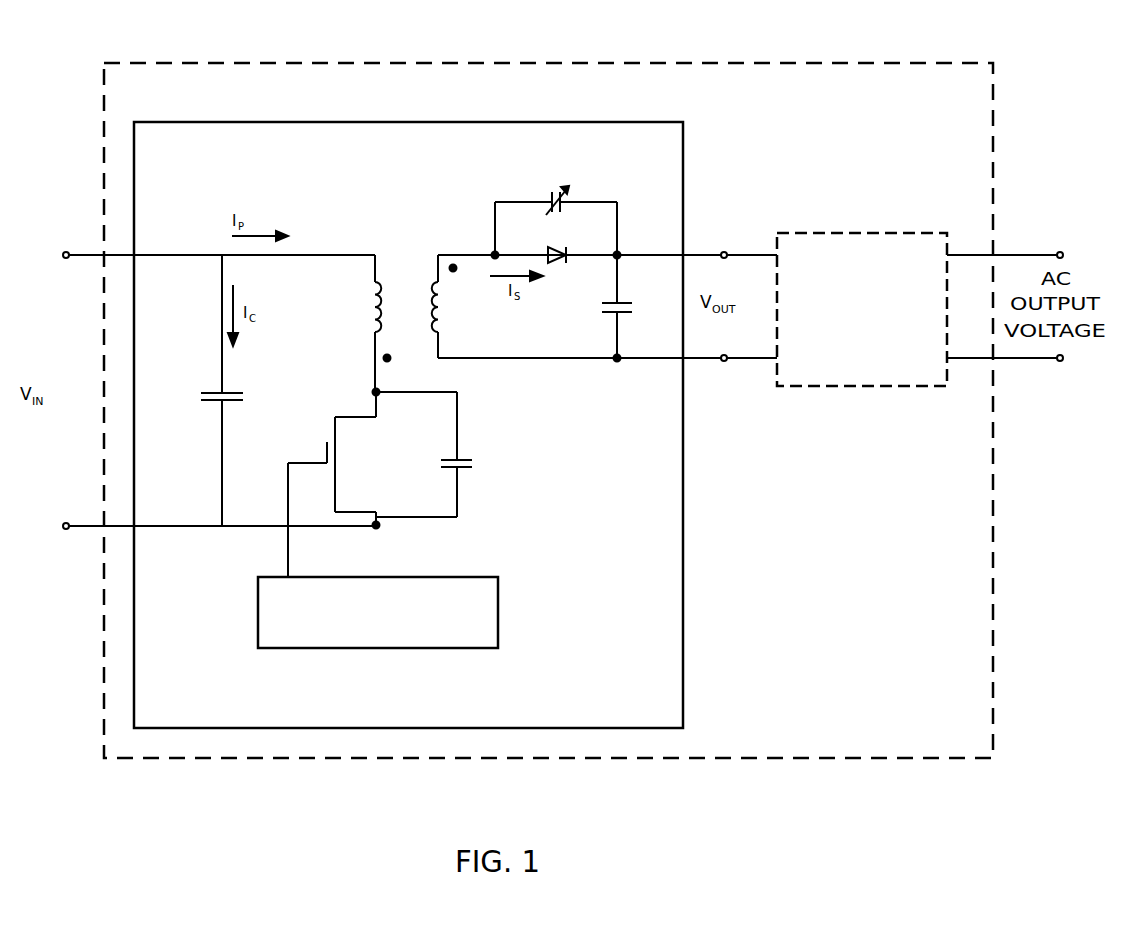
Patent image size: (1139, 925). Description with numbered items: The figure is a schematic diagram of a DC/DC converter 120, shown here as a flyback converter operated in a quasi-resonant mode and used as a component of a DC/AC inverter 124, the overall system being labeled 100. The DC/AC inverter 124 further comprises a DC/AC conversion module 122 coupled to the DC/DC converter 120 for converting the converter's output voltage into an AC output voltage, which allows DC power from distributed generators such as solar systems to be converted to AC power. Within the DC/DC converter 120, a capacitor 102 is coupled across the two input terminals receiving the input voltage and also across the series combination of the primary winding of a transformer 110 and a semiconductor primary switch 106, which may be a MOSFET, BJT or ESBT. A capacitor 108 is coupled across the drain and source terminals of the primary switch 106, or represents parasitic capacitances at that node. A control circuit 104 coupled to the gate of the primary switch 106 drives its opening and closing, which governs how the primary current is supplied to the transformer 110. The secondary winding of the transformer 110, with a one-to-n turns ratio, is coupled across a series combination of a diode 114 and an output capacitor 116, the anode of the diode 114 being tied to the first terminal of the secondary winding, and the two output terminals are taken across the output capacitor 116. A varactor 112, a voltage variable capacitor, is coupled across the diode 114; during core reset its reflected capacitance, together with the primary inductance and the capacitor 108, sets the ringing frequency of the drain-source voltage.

The power conversion system 100 is at (598, 51).
The capacitor 102 is at (213, 392).
The control circuit 104 is at (500, 628).
The primary switch 106 is at (331, 432).
The capacitor 108 is at (466, 456).
The transformer 110 is at (413, 245).
The varactor 112 is at (556, 191).
The diode 114 is at (562, 251).
The output capacitor 116 is at (606, 315).
The DC/DC converter 120 is at (684, 607).
The DC/AC conversion module 122 is at (879, 359).
The DC/AC inverter 124 is at (886, 34).